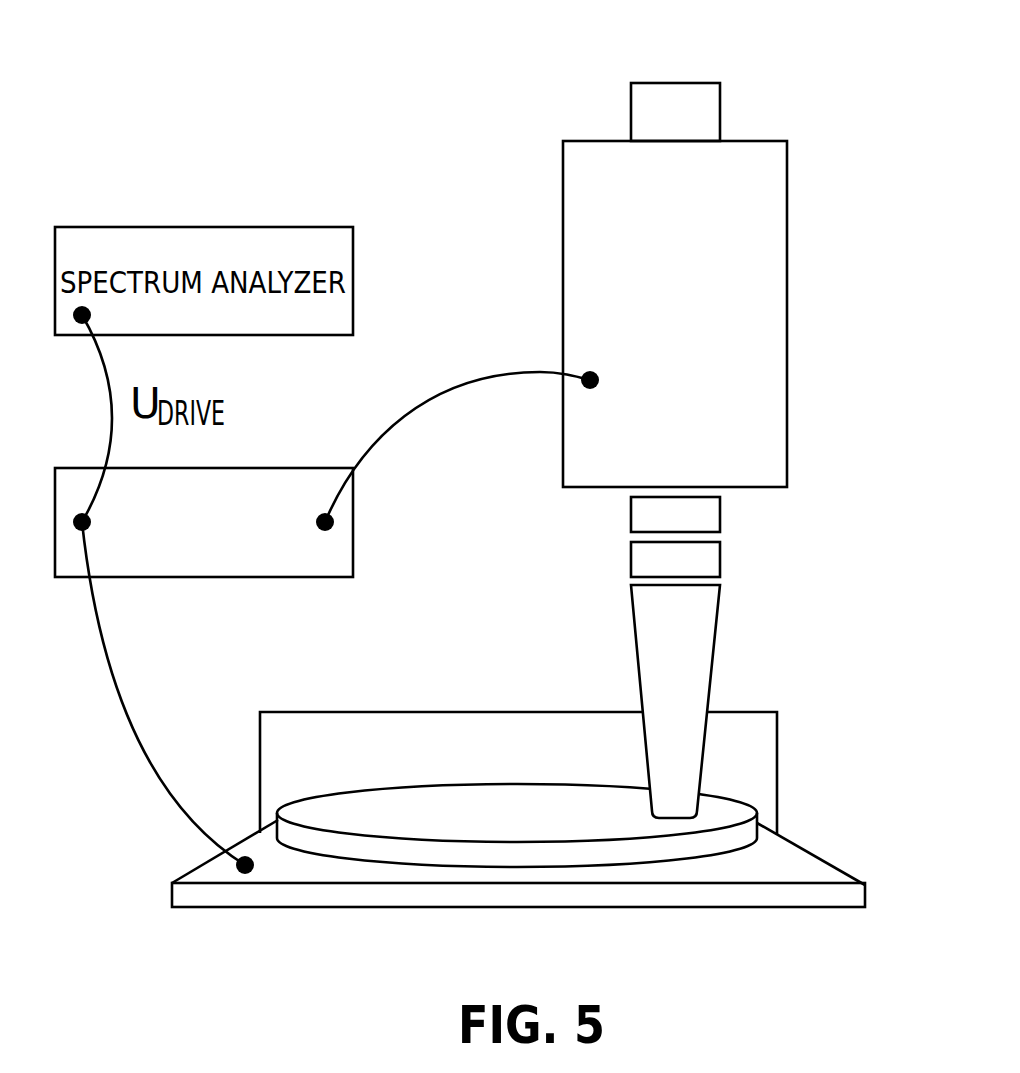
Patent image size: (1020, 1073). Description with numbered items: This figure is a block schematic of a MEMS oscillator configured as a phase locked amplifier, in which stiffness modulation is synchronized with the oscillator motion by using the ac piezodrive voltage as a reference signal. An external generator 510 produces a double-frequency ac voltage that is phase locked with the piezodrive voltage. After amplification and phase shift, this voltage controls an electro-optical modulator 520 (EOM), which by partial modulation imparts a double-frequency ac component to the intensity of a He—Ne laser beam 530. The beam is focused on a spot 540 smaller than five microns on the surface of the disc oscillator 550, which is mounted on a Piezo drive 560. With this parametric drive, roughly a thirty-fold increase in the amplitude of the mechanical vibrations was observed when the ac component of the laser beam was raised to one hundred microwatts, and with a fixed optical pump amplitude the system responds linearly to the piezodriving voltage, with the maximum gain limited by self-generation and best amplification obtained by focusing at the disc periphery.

The external generator 510 is at (355, 522).
The electro-optical modulator 520 is at (789, 312).
The He—Ne laser beam 530 is at (714, 648).
The spot 540 is at (745, 853).
The disc oscillator 550 is at (342, 757).
The Piezo drive 560 is at (700, 907).